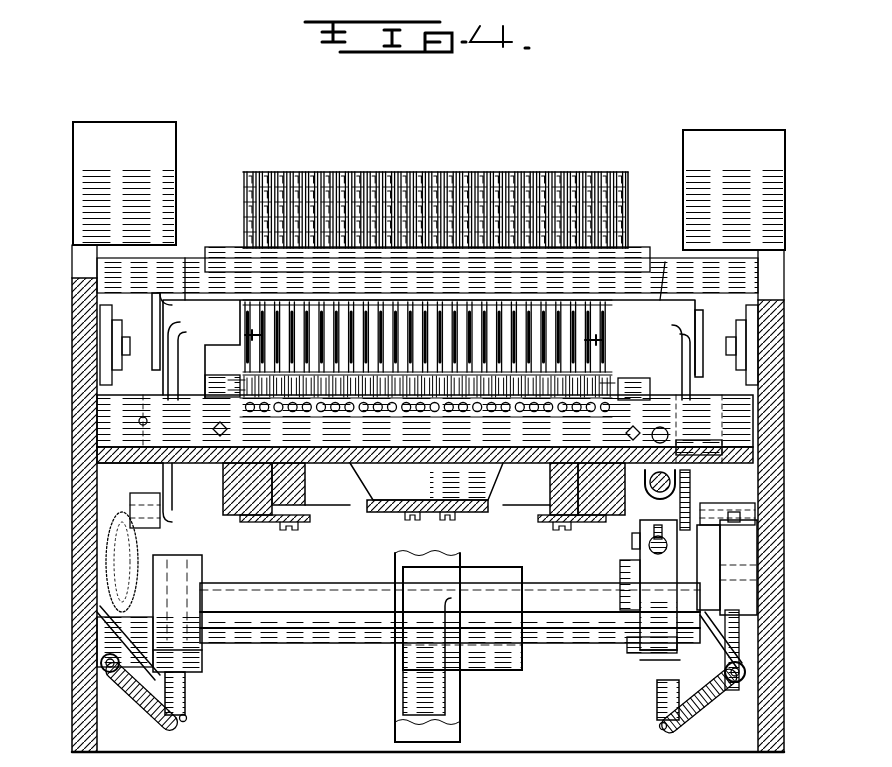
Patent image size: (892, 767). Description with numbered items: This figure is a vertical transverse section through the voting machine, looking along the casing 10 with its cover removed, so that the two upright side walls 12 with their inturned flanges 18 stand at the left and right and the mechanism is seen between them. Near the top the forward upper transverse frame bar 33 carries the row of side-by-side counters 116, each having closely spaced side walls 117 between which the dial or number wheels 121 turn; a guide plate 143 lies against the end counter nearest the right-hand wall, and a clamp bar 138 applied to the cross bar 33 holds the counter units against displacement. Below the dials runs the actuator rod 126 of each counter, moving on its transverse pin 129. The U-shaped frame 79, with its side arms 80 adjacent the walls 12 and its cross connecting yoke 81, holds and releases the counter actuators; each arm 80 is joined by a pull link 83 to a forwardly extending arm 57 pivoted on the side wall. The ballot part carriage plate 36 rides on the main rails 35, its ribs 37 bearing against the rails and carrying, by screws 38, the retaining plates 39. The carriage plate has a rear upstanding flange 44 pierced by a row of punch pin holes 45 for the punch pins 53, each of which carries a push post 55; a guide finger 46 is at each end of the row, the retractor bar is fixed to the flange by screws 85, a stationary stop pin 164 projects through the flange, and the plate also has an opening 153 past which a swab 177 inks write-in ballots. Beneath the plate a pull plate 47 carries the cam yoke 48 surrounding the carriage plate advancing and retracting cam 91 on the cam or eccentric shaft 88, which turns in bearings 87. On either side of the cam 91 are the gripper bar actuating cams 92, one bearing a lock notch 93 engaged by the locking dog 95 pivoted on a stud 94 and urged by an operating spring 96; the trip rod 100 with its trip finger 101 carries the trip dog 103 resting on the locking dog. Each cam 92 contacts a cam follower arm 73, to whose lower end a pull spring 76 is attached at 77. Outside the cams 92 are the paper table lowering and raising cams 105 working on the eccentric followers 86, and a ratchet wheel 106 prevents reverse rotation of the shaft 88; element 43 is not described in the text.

The housing or casing 10 is at (72, 672).
The upright side walls 12 is at (98, 332).
The inturned flanges 18 is at (112, 133).
The forward upper transverse frame bar 33 is at (96, 275).
The main rails 35 is at (236, 522).
The ballot part carriage plate 36 is at (345, 466).
The ribs 37 is at (550, 489).
The screws 38 is at (290, 532).
The retaining plates 39 is at (306, 520).
The block 43 is at (700, 438).
The rear upstanding flange 44 is at (97, 441).
The punch pin holes 45 is at (300, 416).
The guide finger 46 is at (210, 375).
The pull plate 47 is at (373, 512).
The cam yoke 48 is at (460, 732).
The punch pins 53 is at (258, 416).
The push post 55 is at (235, 380).
The forwardly extending arm 57 is at (148, 495).
The cam follower arm 73 is at (186, 697).
The pull spring 76 is at (130, 703).
The spring attachment point 77 is at (188, 719).
The U-shaped frame 79 is at (224, 292).
The side arms 80 is at (160, 300).
The cross connecting yoke 81 is at (185, 297).
The pull link 83 is at (173, 347).
The screws 85 is at (213, 429).
The eccentric follower 86 is at (100, 690).
The bearings 87 is at (748, 627).
The cam or eccentric shaft 88 is at (556, 641).
The carriage plate advancing and retracting cam 91 is at (410, 682).
The gripper bar actuating cam 92 is at (202, 662).
The lock notch 93 is at (627, 648).
The stud 94 is at (632, 542).
The locking dog 95 is at (635, 606).
The operating spring 96 is at (658, 556).
The slidable trip rod 100 is at (678, 481).
The trip finger 101 is at (660, 426).
The trip dog 103 is at (692, 499).
The paper table lowering and raising cam 105 is at (160, 562).
The ratchet wheel 106 is at (742, 682).
The counters 116 is at (574, 173).
The side walls of counter case 117 is at (250, 172).
The dial or number wheels 121 is at (300, 176).
The actuator rod 126 is at (305, 300).
The transverse pin 129 is at (245, 336).
The clamp bar 138 is at (625, 252).
The guide plate 143 is at (625, 193).
The opening 153 is at (100, 466).
The stop pin 164 is at (143, 416).
The swab 177 is at (106, 528).